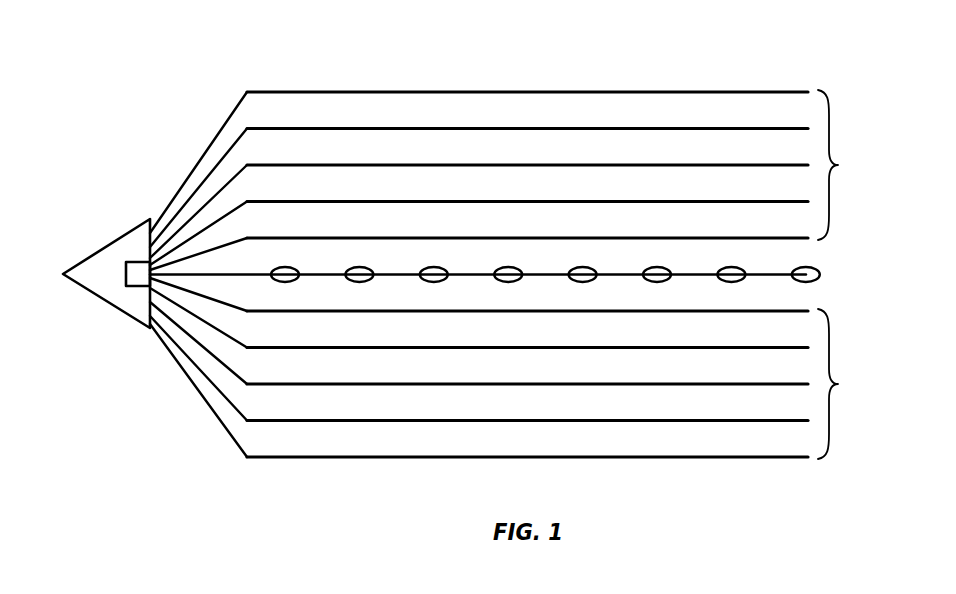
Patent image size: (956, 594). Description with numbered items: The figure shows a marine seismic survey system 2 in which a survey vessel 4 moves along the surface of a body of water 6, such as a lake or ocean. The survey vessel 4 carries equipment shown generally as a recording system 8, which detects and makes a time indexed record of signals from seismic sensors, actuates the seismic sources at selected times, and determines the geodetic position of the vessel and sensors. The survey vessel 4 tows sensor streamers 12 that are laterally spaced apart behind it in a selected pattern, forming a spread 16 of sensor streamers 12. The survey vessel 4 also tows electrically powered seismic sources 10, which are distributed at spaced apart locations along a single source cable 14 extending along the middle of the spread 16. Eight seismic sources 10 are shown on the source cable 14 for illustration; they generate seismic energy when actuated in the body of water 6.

The marine seismic survey system 2 is at (168, 100).
The survey vessel 4 is at (108, 244).
The body of water 6 is at (127, 160).
The recording system 8 is at (137, 289).
The electrically powered seismic sources 10 is at (282, 267).
The sensor streamers 12 is at (360, 91).
The source cable 14 is at (218, 274).
The spread 16 is at (845, 274).